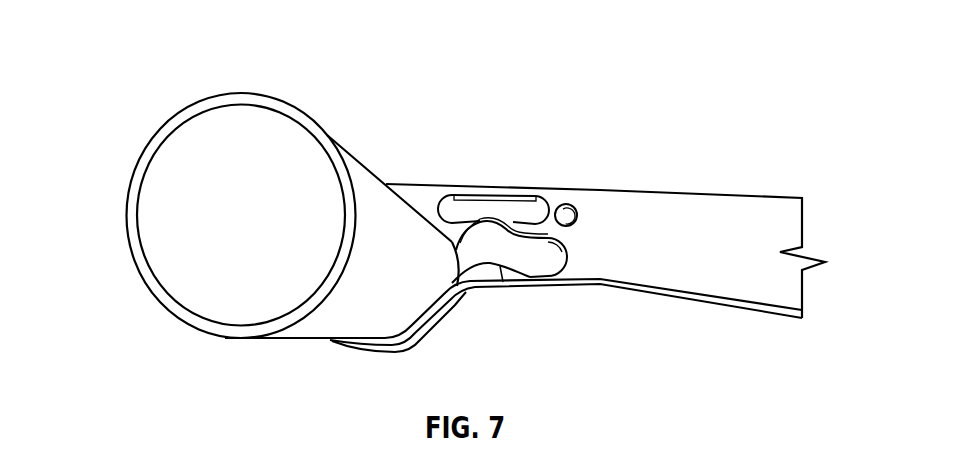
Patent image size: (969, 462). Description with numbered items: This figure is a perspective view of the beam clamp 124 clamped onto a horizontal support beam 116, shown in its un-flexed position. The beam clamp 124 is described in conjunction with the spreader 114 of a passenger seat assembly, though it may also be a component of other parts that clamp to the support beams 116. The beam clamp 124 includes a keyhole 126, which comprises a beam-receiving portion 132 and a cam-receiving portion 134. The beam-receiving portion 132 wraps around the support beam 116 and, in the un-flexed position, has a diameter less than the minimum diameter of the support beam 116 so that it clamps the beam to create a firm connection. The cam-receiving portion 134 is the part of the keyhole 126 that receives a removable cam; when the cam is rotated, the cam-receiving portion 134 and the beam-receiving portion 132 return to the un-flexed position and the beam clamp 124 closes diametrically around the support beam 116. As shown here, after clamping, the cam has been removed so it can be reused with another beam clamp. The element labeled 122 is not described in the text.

The spreader 114 is at (773, 122).
The support beam 116 is at (356, 168).
The aperture 122 is at (553, 160).
The beam clamp 124 is at (483, 221).
The keyhole 126 is at (531, 283).
The beam-receiving portion 132 is at (399, 337).
The cam-receiving portion 134 is at (492, 282).